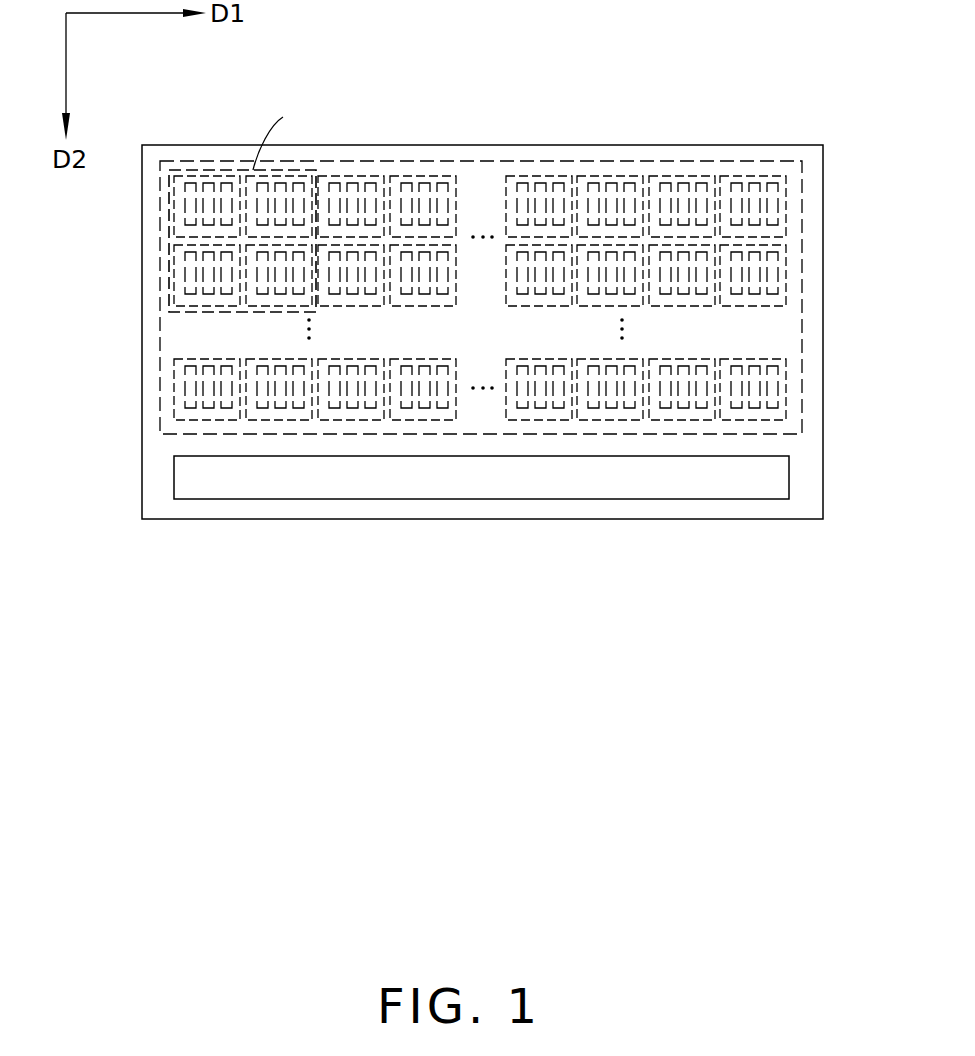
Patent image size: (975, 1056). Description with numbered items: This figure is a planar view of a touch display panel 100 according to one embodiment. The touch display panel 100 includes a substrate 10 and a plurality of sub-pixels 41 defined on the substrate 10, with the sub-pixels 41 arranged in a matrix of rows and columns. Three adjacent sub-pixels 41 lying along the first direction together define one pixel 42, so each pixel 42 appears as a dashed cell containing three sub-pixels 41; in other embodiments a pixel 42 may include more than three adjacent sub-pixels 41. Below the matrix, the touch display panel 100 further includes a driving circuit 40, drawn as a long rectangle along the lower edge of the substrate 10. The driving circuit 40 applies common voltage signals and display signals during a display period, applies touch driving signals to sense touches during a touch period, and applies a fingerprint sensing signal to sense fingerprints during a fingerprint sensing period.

The touch display panel 100 is at (513, 46).
The substrate 10 is at (622, 145).
The driving circuit 40 is at (789, 476).
The sub-pixel 41 is at (188, 205).
The pixel 42 is at (170, 228).